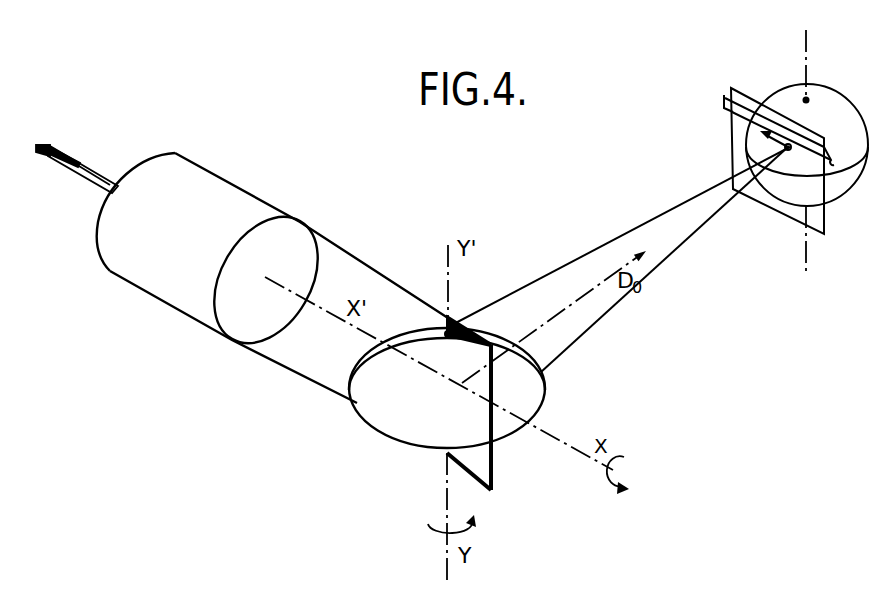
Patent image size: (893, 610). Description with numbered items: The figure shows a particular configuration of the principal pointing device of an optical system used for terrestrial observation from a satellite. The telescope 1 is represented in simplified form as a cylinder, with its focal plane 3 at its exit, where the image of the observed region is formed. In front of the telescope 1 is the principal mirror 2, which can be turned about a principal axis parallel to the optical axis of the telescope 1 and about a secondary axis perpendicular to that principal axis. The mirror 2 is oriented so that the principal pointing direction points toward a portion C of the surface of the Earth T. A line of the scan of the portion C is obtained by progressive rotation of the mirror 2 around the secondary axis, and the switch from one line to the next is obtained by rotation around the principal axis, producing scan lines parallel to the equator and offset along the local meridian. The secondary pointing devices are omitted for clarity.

The telescope 1 is at (217, 172).
The principal mirror 2 is at (380, 436).
The focal plane 3 is at (45, 142).
The portion of the surface of the Earth C is at (762, 205).
The Earth T is at (837, 198).